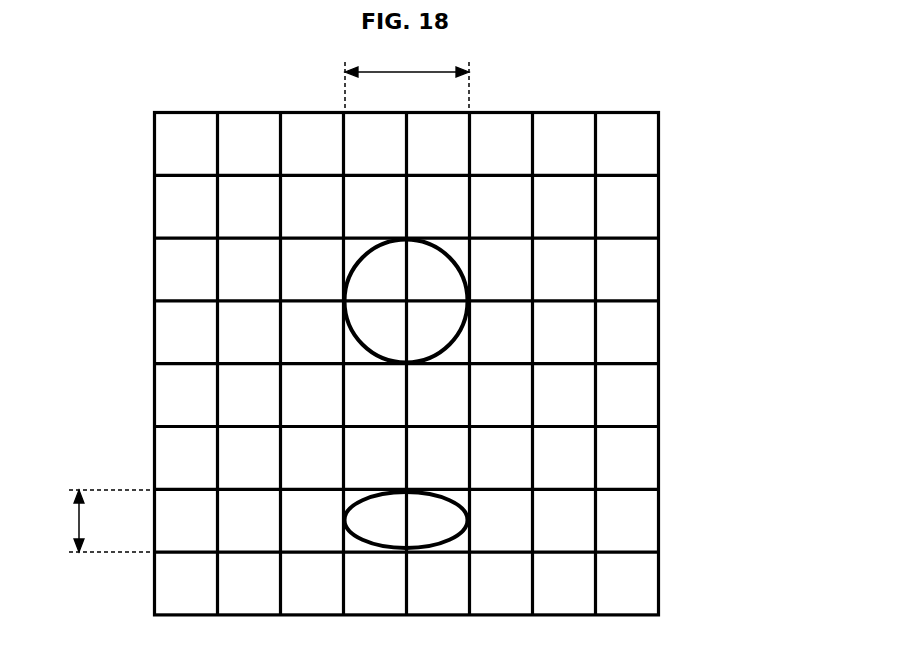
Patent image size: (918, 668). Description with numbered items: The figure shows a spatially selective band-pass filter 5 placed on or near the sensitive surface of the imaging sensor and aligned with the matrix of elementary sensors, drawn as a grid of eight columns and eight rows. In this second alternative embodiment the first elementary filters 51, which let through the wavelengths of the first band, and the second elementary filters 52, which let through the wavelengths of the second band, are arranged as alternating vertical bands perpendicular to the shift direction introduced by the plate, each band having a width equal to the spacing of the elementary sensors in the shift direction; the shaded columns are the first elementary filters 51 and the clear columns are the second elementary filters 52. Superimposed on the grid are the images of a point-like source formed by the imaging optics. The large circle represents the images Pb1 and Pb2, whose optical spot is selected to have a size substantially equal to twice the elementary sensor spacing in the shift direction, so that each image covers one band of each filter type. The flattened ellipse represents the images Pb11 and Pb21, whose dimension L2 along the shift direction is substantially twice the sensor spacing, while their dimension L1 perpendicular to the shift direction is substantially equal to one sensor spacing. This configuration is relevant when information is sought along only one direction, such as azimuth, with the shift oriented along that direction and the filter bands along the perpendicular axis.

The spatially selective band-pass filter 5 is at (68, 299).
The first elementary filters 51 is at (185, 112).
The second elementary filters 52 is at (660, 270).
The image of a point-like source Pb1 is at (246, 315).
The image of a point-like source Pb2 is at (352, 340).
The image of a point-like source Pb11 is at (573, 524).
The image of a point-like source Pb21 is at (463, 536).
The dimension perpendicular to the shift direction L1 is at (105, 521).
The dimension along the shift direction L2 is at (407, 81).